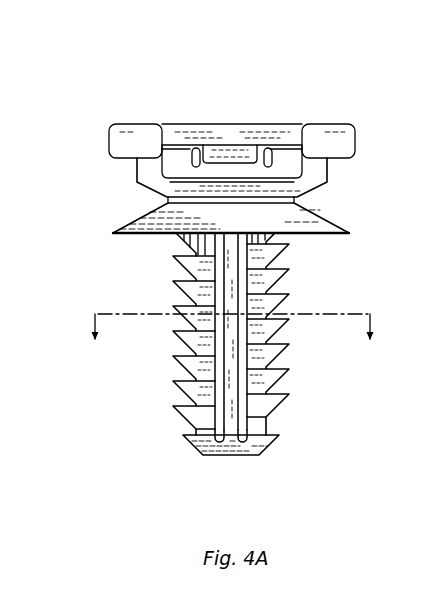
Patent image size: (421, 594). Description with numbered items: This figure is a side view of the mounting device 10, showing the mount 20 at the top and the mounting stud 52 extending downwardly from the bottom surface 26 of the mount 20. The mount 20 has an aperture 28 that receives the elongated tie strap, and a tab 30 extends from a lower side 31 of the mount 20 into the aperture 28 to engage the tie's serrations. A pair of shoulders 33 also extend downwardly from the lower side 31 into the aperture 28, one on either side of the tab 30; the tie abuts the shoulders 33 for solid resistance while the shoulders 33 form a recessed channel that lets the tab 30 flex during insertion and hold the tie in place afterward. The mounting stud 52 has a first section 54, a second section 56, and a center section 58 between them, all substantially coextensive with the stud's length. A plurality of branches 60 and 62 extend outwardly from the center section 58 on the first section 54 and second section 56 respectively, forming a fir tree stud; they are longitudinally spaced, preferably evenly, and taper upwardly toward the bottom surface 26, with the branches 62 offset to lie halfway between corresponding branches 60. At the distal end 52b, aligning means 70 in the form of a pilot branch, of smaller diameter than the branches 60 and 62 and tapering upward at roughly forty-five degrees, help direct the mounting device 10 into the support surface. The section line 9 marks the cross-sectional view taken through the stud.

The mounting device 10 is at (324, 62).
The mount 20 is at (108, 121).
The bottom surface 26 is at (168, 205).
The aperture 28 is at (197, 167).
The tab 30 is at (238, 157).
The lower side 31 is at (278, 162).
The shoulders 33 is at (175, 148).
The mounting stud 52 is at (233, 373).
The distal end 52b is at (212, 458).
The first section 54 is at (173, 411).
The second section 56 is at (275, 405).
The center section 58 is at (267, 438).
The branches 60 is at (172, 310).
The branches 62 is at (292, 304).
The aligning means 70 is at (232, 456).
The section line 9- 9 is at (234, 326).